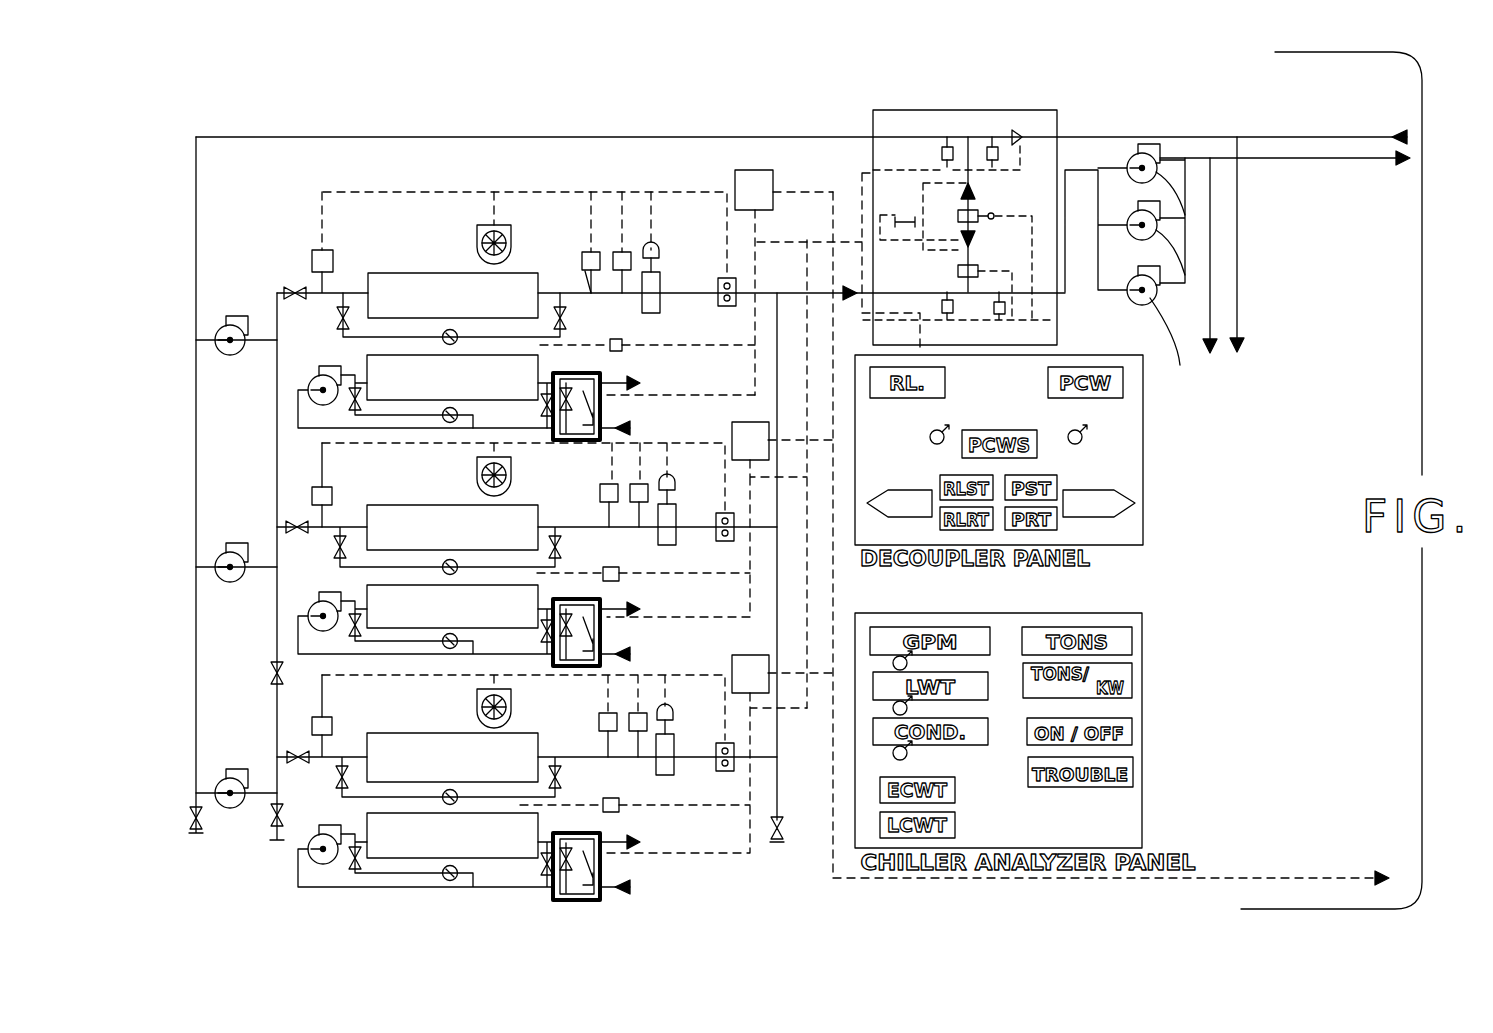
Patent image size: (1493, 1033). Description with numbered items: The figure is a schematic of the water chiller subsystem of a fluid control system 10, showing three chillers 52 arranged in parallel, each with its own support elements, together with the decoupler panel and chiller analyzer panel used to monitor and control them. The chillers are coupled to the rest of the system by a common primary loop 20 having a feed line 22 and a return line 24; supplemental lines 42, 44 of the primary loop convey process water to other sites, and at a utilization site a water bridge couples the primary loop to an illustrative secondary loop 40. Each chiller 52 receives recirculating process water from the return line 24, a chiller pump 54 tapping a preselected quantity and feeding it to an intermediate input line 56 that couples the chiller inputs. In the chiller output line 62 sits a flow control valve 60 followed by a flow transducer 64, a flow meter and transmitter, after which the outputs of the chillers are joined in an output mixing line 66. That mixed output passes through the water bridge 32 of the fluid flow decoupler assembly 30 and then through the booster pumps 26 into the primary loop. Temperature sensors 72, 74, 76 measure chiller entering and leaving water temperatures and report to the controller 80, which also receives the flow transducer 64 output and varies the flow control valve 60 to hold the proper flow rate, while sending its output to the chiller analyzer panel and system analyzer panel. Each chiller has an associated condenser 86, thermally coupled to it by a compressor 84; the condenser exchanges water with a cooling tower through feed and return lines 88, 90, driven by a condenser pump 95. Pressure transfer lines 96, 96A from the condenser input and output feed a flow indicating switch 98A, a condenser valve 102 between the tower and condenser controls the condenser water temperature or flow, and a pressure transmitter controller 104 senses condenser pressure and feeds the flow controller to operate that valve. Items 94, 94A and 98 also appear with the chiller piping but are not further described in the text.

The system 10 is at (790, 127).
The primary loop 20 is at (1291, 128).
The feed line 22 is at (1354, 160).
The return line 24 is at (1313, 133).
The auxiliary feed water booster pumps 26 is at (1181, 364).
The fluid flow decoupler assembly 30 is at (1030, 110).
The water bridge 32 is at (943, 213).
The secondary loop 40 is at (1239, 207).
The supplemental line 42 is at (1211, 275).
The supplemental line 44 is at (1239, 323).
The chiller 52 is at (368, 273).
The chiller pump 54 is at (228, 365).
The intermediate input line 56 is at (292, 524).
The flow control valve 60 is at (650, 242).
The output line 62 is at (619, 339).
The flow transducer 64 is at (727, 278).
The output mixing line 66 is at (778, 293).
The temperature sensor 72 is at (311, 260).
The temperature sensor 74 is at (583, 251).
The temperature sensor 76 is at (592, 252).
The controller 80 is at (774, 180).
The compressor 84 is at (497, 225).
The condenser 86 is at (367, 358).
The feed line 88 is at (630, 428).
The return line 90 is at (640, 383).
The valve 94 is at (343, 340).
The valve 94A is at (566, 300).
The condenser pump 95 is at (355, 400).
The pressure transfer line 96 is at (322, 445).
The pressure transfer line 96A is at (283, 532).
The flow meter 98 is at (450, 329).
The flow indicating switch 98A is at (450, 422).
The condenser valve 102 is at (585, 405).
The pressure transmitter controller 104 is at (621, 252).